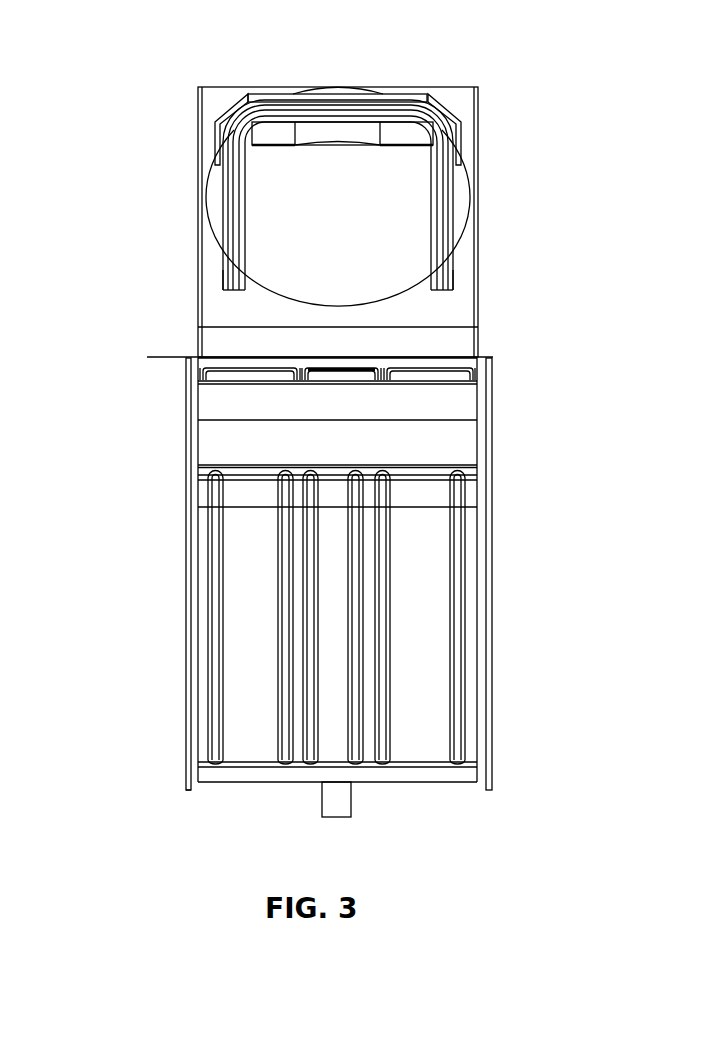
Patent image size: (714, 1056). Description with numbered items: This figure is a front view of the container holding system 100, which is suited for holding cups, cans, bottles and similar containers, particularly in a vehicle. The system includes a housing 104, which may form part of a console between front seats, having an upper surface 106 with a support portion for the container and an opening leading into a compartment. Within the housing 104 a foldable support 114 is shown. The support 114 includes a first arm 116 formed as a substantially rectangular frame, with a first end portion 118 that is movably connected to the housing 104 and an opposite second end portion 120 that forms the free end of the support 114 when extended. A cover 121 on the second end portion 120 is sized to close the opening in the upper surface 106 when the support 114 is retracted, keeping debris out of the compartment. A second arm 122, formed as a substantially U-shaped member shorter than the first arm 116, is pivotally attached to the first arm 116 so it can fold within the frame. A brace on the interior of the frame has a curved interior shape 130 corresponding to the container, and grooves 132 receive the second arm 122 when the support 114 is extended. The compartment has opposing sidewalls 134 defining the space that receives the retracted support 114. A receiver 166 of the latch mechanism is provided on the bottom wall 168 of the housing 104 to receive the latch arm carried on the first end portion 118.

The container holding system 100 is at (118, 595).
The housing 104 is at (545, 505).
The upper surface 106 is at (487, 357).
The support 114 is at (440, 103).
The first arm 116 is at (215, 137).
The first end portion 118 is at (198, 338).
The second end portion 120 is at (198, 97).
The cover 121 is at (300, 87).
The second arm 122 is at (442, 177).
The interior shape 130 is at (393, 298).
The grooves 132 is at (457, 278).
The sidewalls 134 is at (492, 602).
The receiver 166 is at (352, 810).
The bottom wall 168 is at (445, 782).